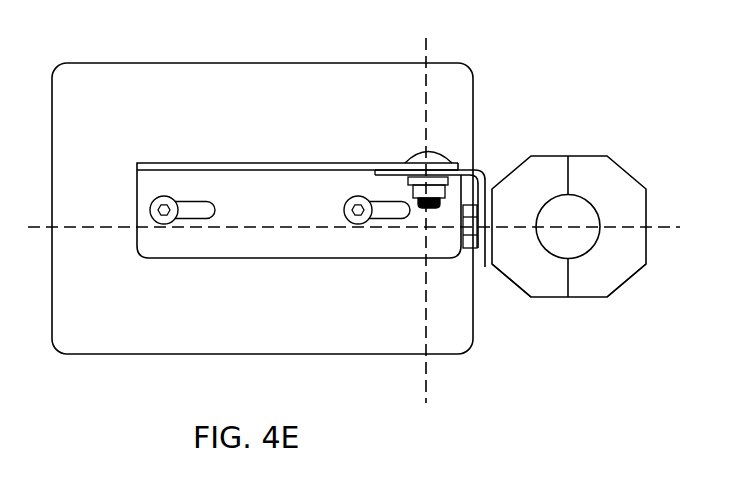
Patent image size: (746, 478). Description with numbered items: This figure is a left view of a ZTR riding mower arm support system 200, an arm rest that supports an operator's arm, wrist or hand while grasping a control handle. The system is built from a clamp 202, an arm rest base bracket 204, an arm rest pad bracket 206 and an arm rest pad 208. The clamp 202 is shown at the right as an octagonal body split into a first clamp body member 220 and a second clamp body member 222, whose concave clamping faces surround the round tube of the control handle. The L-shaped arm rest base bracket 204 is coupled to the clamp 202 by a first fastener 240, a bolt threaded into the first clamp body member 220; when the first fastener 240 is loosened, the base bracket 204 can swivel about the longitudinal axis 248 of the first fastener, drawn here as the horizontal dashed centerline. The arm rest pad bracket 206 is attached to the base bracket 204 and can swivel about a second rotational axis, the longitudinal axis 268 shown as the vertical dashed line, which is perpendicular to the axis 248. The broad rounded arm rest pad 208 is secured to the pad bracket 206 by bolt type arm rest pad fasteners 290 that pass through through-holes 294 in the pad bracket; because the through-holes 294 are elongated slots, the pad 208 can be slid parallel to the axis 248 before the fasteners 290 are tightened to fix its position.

The ZTR riding mower arm support system 200 is at (606, 95).
The ZTR arm rest clamp 202 is at (621, 155).
The arm rest base bracket 204 is at (488, 154).
The arm rest pad bracket 206 is at (184, 155).
The arm rest pad 208 is at (125, 59).
The first clamp body member 220 is at (547, 309).
The second clamp body member 222 is at (621, 292).
The first fastener 240 is at (471, 252).
The longitudinal axis of the first fastener 248 is at (678, 218).
The longitudinal axis of the second fastener 268 is at (431, 386).
The arm rest pad fasteners 290 is at (193, 226).
The through-holes 294 is at (163, 228).